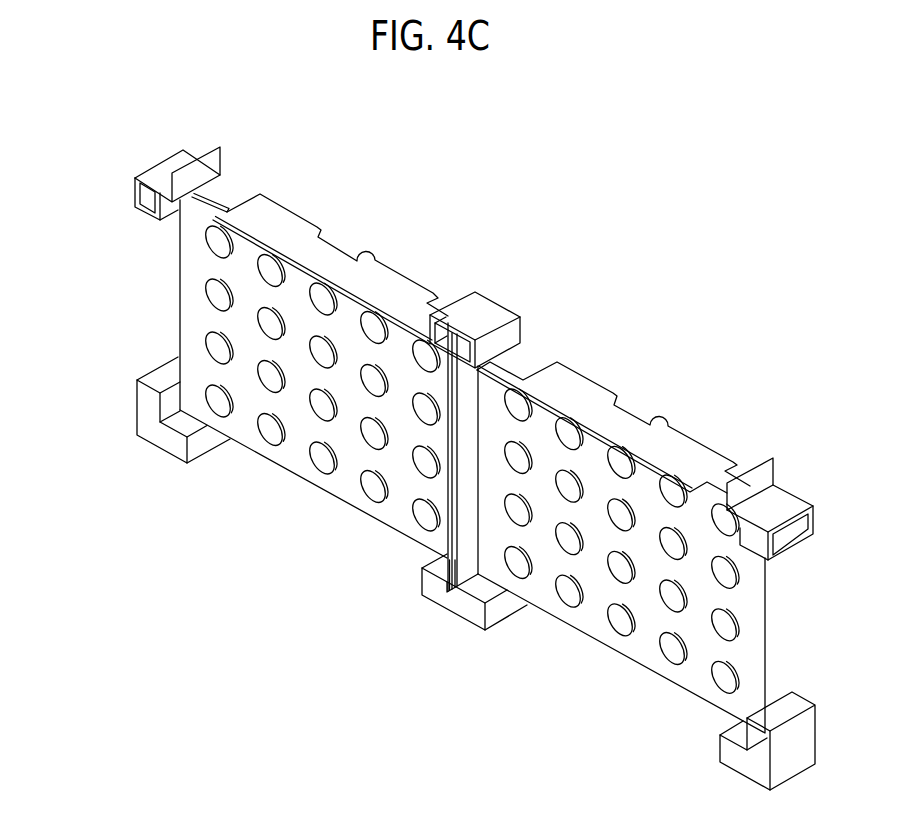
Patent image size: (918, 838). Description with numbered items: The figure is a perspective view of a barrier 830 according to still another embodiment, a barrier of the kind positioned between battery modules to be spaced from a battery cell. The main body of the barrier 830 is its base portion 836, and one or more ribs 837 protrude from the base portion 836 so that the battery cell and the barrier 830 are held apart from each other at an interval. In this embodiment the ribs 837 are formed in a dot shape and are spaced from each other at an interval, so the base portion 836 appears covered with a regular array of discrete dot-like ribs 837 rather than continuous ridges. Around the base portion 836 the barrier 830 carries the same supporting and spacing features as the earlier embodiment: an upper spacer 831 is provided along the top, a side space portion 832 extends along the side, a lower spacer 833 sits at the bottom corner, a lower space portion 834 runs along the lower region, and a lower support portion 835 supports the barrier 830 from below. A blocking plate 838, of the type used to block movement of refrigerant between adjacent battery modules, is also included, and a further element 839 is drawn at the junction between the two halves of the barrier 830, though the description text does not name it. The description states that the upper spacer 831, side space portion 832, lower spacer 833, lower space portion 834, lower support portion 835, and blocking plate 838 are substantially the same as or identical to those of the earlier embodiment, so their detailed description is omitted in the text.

The barrier 830 is at (657, 304).
The upper spacer 831 is at (133, 190).
The side space portion 832 is at (164, 322).
The lower spacer 833 is at (145, 417).
The lower space portion 834 is at (289, 485).
The lower support portion 835 is at (462, 607).
The base portion 836 is at (363, 457).
The ribs 837 is at (385, 490).
The blocking plate 838 is at (462, 472).
The connector clip 839 is at (497, 307).